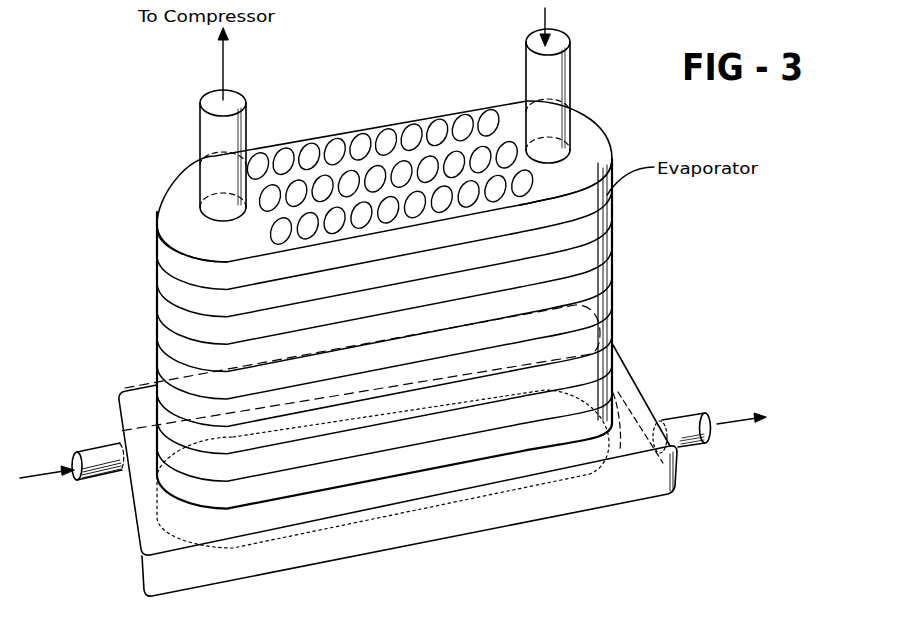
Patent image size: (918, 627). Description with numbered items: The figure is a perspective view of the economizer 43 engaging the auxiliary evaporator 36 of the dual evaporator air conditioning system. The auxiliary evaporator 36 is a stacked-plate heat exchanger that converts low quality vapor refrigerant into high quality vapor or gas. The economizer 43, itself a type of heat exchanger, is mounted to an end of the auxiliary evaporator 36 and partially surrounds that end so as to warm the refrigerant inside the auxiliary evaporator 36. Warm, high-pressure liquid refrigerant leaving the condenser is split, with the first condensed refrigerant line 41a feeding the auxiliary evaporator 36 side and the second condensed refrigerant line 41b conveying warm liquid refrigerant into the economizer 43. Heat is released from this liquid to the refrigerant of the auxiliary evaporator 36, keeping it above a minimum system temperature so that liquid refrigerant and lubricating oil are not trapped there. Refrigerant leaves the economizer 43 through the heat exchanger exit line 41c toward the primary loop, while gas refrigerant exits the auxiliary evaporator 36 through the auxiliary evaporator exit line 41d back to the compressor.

The auxiliary evaporator 36 is at (626, 278).
The economizer 43 is at (588, 495).
The first condensed refrigerant line 41a is at (557, 82).
The second condensed refrigerant line 41b is at (100, 457).
The heat exchanger exit line 41c is at (687, 425).
The auxiliary evaporator exit line 41d is at (228, 140).